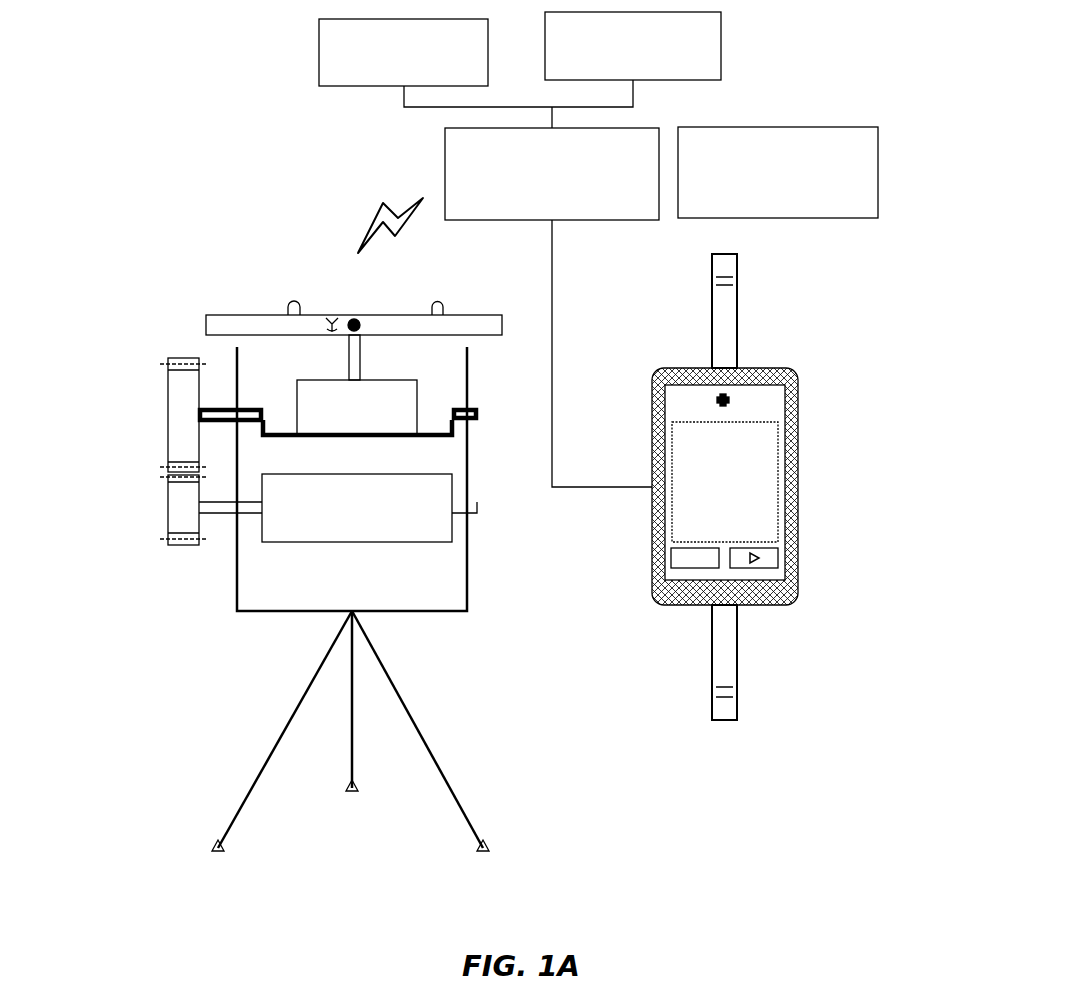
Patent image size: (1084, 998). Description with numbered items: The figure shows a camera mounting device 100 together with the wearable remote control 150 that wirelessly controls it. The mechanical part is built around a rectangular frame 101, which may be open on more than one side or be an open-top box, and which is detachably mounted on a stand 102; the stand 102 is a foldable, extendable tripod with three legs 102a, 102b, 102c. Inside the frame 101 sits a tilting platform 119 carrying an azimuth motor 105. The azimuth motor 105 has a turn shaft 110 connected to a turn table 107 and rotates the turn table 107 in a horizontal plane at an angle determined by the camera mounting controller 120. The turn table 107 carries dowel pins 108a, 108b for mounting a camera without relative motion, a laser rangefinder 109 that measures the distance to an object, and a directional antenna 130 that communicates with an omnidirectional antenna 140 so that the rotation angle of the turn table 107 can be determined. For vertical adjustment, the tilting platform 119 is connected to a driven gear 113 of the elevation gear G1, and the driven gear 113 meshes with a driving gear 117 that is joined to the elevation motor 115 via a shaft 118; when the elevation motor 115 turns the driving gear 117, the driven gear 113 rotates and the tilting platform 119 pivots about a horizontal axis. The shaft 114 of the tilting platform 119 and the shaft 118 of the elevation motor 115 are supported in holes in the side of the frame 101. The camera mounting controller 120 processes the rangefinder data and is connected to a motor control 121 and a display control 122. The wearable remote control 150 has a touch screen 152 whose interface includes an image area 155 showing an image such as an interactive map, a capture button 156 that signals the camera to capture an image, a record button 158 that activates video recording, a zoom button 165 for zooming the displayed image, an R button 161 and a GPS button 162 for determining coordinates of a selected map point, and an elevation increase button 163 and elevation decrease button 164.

The camera mounting device 100 is at (196, 271).
The elevation gear G1 is at (164, 339).
The rectangular frame 101 is at (467, 612).
The stand 102 is at (350, 780).
The leg 102a is at (228, 826).
The leg 102b is at (354, 790).
The leg 102c is at (420, 742).
The azimuth motor 105 is at (408, 380).
The turn table 107 is at (502, 336).
The dowel pin 108a is at (437, 302).
The dowel pin 108b is at (292, 302).
The laser rangefinder 109 is at (355, 318).
The turn shaft 110 is at (347, 360).
The driven gear 113 is at (168, 393).
The shaft 114 is at (262, 406).
The elevation motor 115 is at (357, 545).
The driving gear 117 is at (168, 507).
The shaft 118 is at (230, 515).
The tilting platform 119 is at (479, 414).
The camera mounting controller 120 is at (552, 174).
The motor control 121 is at (403, 52).
The display control 122 is at (633, 46).
The directional antenna 130 is at (332, 318).
The omnidirectional antenna 140 is at (750, 368).
The wearable remote control 150 is at (791, 335).
The touch screen 152 is at (800, 421).
The image area 155 is at (770, 508).
The capture button 156 is at (665, 560).
The record button 158 is at (780, 557).
The relative coordinate button 161 is at (668, 402).
The GPS button 162 is at (680, 372).
The elevation increase button 163 is at (806, 376).
The elevation decrease button 164 is at (800, 396).
The zoom button 165 is at (700, 380).